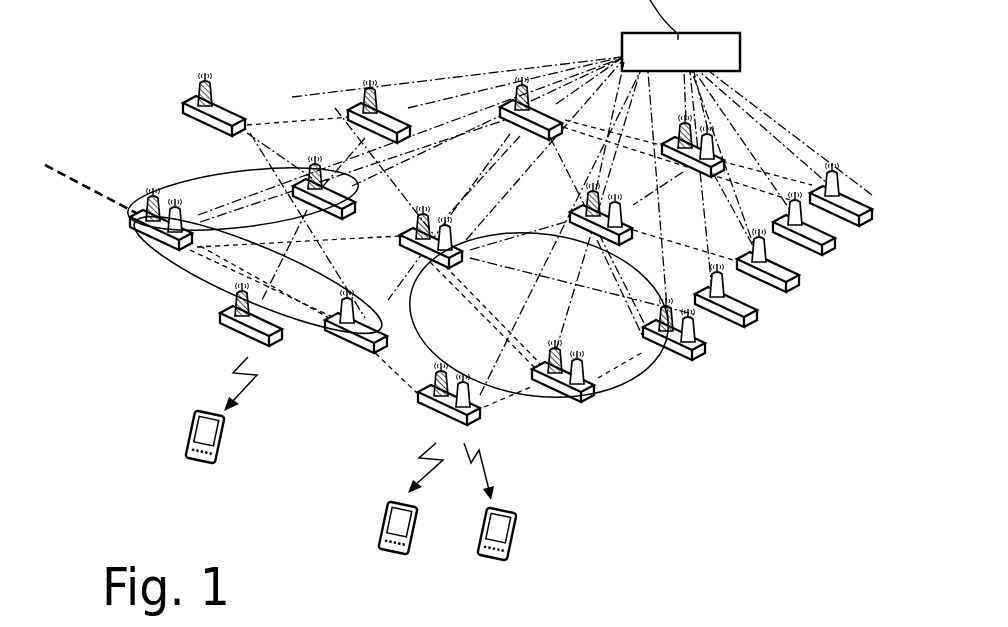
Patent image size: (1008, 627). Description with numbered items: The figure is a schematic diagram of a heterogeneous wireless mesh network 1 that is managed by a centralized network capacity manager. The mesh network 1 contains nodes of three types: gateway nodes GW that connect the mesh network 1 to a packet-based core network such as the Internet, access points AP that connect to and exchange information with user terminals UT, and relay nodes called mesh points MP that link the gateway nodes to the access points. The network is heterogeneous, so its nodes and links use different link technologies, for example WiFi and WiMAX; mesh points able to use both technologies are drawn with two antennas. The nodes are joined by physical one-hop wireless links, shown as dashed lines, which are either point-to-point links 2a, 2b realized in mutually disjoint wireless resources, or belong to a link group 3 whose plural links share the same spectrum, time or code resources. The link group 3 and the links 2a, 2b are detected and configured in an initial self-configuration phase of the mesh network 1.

The mesh network 1 is at (144, 56).
The point-to-point link 2a is at (207, 185).
The point-to-point link 2b is at (210, 275).
The link group 3 is at (640, 378).